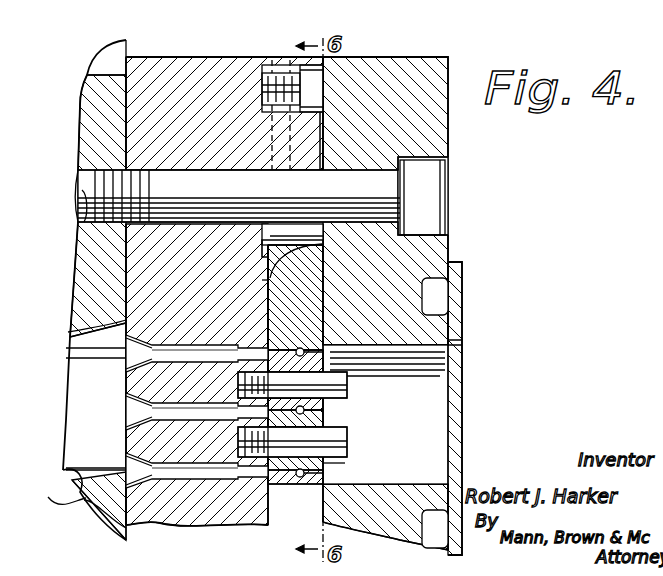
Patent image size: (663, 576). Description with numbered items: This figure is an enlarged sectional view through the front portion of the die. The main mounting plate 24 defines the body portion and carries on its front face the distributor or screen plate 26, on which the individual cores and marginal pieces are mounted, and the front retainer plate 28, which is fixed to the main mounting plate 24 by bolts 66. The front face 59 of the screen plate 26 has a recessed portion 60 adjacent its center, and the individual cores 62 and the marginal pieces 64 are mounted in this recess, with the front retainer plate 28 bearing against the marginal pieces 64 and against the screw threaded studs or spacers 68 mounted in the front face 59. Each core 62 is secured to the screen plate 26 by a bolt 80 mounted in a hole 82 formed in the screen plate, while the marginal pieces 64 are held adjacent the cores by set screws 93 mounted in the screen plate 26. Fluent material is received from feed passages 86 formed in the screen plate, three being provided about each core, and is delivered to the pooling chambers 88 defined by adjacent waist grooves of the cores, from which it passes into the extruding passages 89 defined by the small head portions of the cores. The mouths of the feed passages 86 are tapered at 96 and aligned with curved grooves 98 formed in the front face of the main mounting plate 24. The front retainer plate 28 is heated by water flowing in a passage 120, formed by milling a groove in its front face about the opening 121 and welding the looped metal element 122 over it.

The main mounting plate 24 is at (126, 44).
The screen plate 26 is at (172, 57).
The front retainer plate 28 is at (448, 140).
The front face of the screen plate 59 is at (330, 62).
The recessed portion 60 is at (300, 262).
The individual core 62 is at (330, 418).
The marginal piece 64 is at (385, 414).
The bolt 66 is at (448, 205).
The screw threaded stud or spacer 68 is at (292, 73).
The bolt 80 is at (335, 383).
The hole 82 is at (268, 346).
The feed passage 86 is at (152, 356).
The pooling chamber 88 is at (300, 356).
The extruding passage 89 is at (326, 468).
The set screw 93 is at (268, 282).
The tapered mouth 96 is at (126, 354).
The curved groove 98 is at (68, 334).
The passage 120 is at (436, 296).
The opening 121 is at (450, 348).
The looped metal element 122 is at (455, 310).